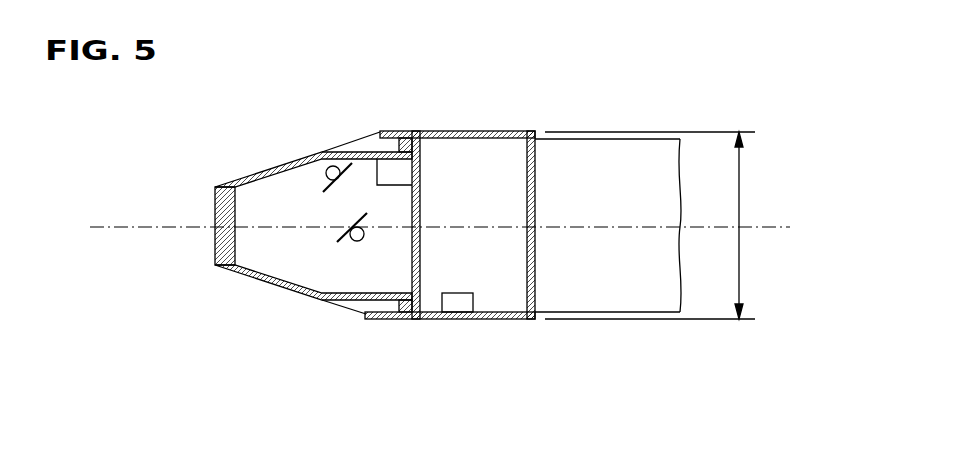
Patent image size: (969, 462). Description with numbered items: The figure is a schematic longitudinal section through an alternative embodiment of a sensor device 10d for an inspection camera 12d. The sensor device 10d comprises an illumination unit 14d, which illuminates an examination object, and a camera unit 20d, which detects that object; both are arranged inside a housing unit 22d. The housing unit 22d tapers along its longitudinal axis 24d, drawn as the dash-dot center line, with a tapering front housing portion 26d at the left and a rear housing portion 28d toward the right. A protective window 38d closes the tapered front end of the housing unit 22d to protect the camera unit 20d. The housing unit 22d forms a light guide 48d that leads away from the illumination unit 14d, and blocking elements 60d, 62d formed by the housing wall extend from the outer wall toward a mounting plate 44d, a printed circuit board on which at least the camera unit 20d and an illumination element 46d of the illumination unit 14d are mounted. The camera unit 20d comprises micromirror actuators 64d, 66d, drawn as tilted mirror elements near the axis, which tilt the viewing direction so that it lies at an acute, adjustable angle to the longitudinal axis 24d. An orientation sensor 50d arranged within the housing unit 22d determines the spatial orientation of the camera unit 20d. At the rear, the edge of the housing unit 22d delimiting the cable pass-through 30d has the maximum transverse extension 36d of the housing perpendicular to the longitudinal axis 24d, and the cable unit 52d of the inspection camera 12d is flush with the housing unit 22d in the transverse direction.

The sensor device 10d is at (540, 125).
The inspection camera 12d is at (637, 297).
The illumination unit 14d is at (405, 312).
The camera unit 20d is at (403, 173).
The housing unit 22d is at (480, 320).
The longitudinal axis 24d is at (118, 222).
The front housing portion 26d is at (223, 187).
The rear housing portion 28d is at (522, 318).
The cable pass-through 30d is at (535, 157).
The maximum transverse extension 36d is at (740, 187).
The protective window 38d is at (217, 250).
The mounting plate 44d is at (422, 278).
The illumination element 46d is at (407, 140).
The light guide 48d is at (362, 306).
The orientation sensor 50d is at (445, 312).
The cable unit 52d is at (565, 320).
The blocking element 60d is at (376, 158).
The blocking element 62d is at (348, 299).
The micromirror actuator 64d is at (320, 152).
The micromirror actuator 66d is at (337, 242).